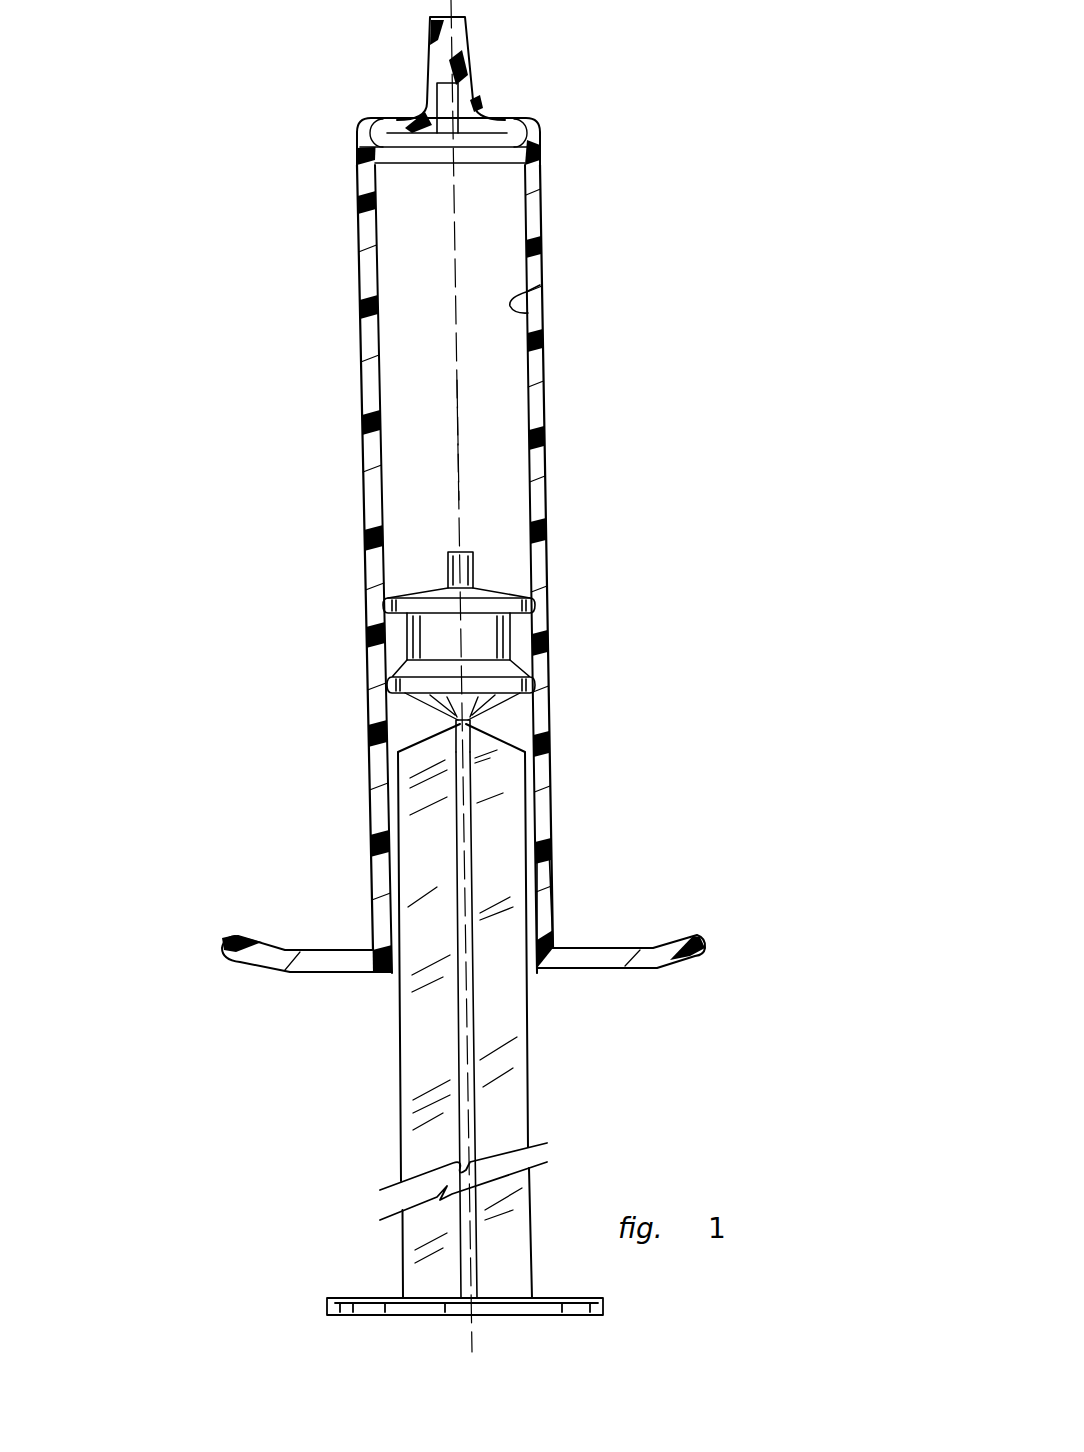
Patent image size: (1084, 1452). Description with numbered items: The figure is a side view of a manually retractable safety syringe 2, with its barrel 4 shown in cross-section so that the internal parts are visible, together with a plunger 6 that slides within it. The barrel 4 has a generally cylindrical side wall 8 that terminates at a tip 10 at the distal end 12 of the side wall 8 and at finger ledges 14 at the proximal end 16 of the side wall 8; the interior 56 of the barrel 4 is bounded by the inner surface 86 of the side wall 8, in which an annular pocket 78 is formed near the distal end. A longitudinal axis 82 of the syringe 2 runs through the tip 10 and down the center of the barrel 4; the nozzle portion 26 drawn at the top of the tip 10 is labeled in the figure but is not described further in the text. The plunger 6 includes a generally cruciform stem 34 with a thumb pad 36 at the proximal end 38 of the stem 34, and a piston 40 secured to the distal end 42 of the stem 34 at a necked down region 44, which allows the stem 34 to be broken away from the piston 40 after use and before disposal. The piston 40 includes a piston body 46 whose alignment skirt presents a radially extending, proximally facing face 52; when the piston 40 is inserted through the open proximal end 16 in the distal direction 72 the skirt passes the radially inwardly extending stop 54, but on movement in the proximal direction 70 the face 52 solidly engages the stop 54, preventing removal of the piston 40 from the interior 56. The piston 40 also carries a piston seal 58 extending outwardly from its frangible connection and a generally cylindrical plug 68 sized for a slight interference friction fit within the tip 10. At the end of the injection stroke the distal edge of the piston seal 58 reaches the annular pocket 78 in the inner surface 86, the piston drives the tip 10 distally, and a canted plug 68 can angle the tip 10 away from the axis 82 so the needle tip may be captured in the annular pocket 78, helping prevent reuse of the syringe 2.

The safety syringe 2 is at (705, 170).
The barrel 4 is at (441, 545).
The plunger 6 is at (340, 1110).
The side wall 8 is at (540, 345).
The tip 10 is at (472, 75).
The distal end 12 is at (355, 180).
The finger ledges 14 is at (703, 940).
The proximal end 16 is at (545, 905).
The nozzle tip 26 is at (446, 75).
The stem 34 is at (392, 1030).
The thumb pad 36 is at (600, 1298).
The proximal end of stem 38 is at (510, 1258).
The piston 40 is at (482, 637).
The distal end of stem 42 is at (481, 1005).
The necked down region 44 is at (478, 722).
The piston body 46 is at (510, 650).
The proximally facing face 52 is at (410, 695).
The stop 54 is at (533, 966).
The interior 56 is at (455, 440).
The piston seal 58 is at (535, 605).
The plug 68 is at (455, 575).
The proximal direction 70 is at (633, 1088).
The distal direction 72 is at (338, 1178).
The annular pocket 78 is at (540, 148).
The axis 82 is at (453, 215).
The inner surface 86 is at (540, 285).